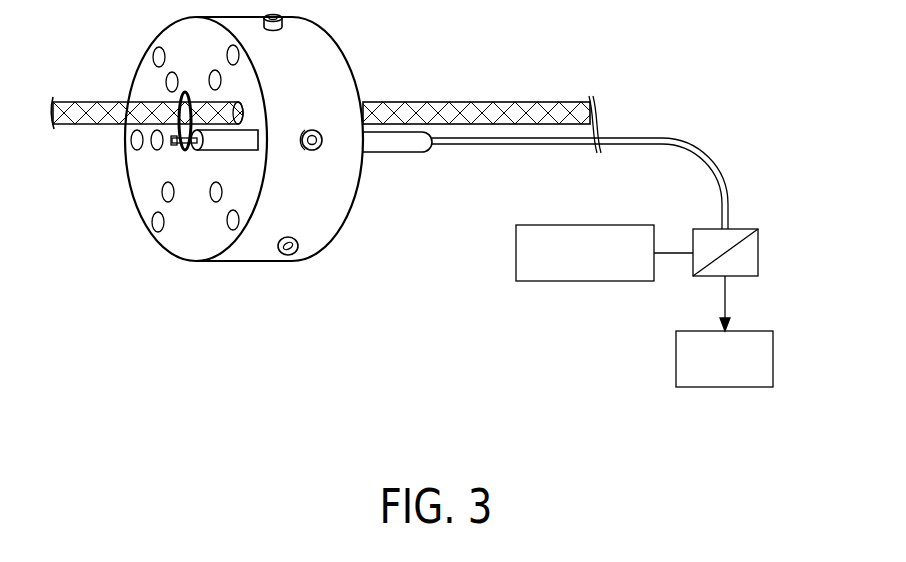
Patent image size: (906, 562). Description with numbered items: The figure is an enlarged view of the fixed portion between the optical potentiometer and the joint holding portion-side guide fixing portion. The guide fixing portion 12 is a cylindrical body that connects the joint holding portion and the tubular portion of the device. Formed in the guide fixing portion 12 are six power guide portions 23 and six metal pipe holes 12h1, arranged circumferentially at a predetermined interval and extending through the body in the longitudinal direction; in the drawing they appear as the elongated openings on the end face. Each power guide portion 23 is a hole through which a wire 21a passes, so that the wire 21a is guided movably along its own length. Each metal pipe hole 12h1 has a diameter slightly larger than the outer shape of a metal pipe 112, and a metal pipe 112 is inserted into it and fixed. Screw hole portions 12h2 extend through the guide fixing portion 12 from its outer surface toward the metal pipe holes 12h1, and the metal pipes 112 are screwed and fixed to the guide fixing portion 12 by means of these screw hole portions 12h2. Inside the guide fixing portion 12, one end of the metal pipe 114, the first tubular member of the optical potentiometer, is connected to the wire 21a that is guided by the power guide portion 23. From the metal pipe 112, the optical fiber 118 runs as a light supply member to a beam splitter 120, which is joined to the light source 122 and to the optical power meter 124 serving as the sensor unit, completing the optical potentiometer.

The guide fixing portion 12 is at (260, 308).
The metal pipe hole 12h1 is at (233, 226).
The screw hole portion 12h2 is at (313, 128).
The wire 21a is at (88, 102).
The power guide portion 23 is at (240, 101).
The metal pipe 114 is at (172, 143).
The metal pipe 112 is at (400, 153).
The optical fiber 118 is at (503, 146).
The beam splitter 120 is at (758, 250).
The light source 122 is at (583, 281).
The optical power meter 124 is at (724, 388).